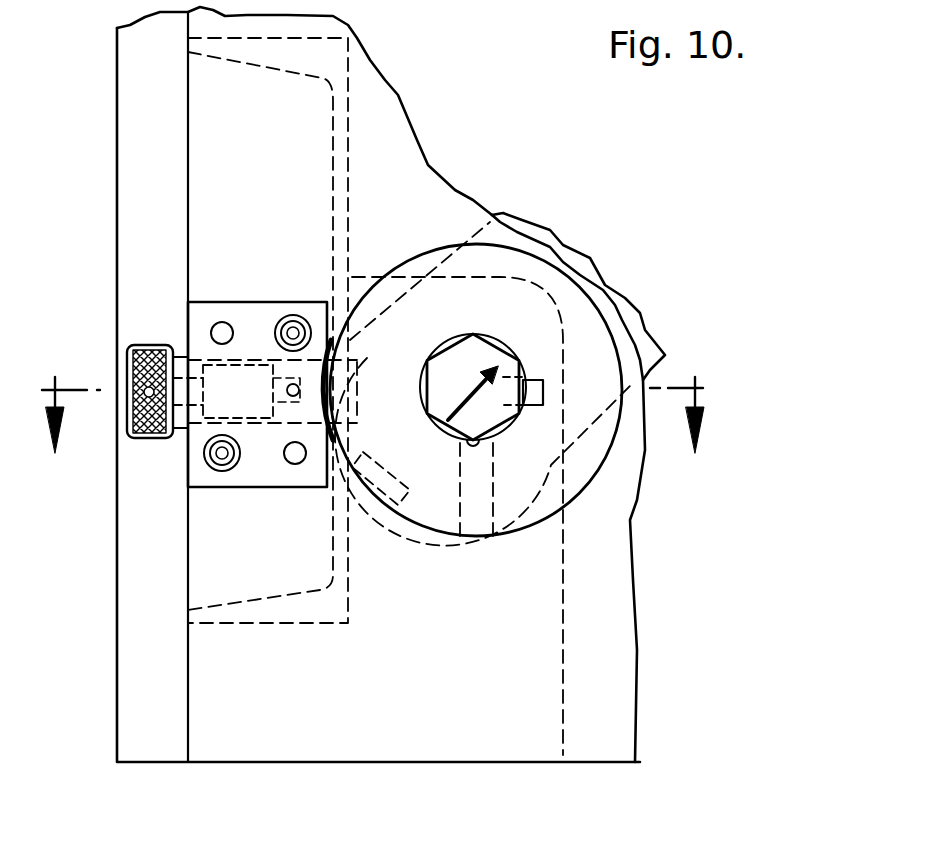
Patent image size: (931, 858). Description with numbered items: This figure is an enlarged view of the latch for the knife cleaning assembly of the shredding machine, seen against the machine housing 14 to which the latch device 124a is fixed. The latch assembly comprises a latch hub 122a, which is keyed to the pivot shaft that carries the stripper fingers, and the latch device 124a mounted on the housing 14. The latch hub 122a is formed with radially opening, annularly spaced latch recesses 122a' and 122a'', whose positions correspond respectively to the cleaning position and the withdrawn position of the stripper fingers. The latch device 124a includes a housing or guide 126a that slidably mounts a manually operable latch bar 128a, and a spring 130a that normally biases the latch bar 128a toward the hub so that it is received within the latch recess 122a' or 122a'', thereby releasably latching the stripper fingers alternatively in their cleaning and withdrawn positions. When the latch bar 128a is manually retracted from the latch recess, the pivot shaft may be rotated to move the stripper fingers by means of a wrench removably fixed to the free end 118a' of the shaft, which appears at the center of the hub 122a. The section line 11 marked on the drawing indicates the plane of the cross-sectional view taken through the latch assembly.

The machine housing 14 is at (117, 668).
The free end of pivot shaft 118a' is at (540, 339).
The latch hub 122a is at (517, 487).
The latch recess 122a' is at (482, 429).
The latch recess 122a'' is at (411, 519).
The latch device 124a is at (235, 301).
The housing or guide 126a is at (247, 488).
The latch bar 128a is at (138, 440).
The spring 130a is at (241, 363).
The section line 11- 11 is at (375, 391).